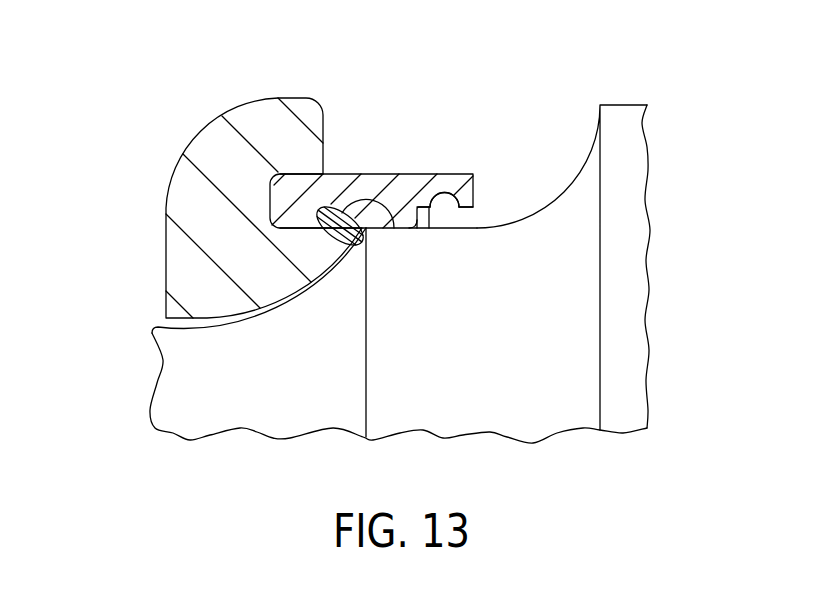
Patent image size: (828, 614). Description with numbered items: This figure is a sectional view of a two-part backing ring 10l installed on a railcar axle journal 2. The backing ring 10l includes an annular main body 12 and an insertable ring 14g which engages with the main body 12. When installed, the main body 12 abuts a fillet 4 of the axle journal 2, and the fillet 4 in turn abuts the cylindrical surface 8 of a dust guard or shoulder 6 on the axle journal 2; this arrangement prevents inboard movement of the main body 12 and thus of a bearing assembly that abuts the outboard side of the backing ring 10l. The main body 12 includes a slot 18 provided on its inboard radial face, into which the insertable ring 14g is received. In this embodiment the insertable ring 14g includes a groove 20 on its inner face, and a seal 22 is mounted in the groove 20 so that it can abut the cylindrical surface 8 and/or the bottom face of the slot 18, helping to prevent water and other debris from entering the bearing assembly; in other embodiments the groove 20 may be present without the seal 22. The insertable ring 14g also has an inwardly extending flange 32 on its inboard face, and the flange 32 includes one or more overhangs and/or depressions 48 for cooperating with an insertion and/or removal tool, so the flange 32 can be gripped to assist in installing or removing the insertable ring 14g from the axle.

The two-part backing ring 10l is at (116, 70).
The main body 12 is at (208, 148).
The insertable ring 14g is at (338, 183).
The cylindrical surface 8 is at (428, 205).
The flange 32 is at (443, 182).
The overhangs and/or depressions 48 is at (449, 204).
The slot 18 is at (268, 230).
The groove 20 is at (383, 229).
The seal 22 is at (357, 231).
The dust guard or shoulder 6 is at (574, 328).
The railcar axle journal 2 is at (183, 385).
The fillet 4 is at (263, 315).